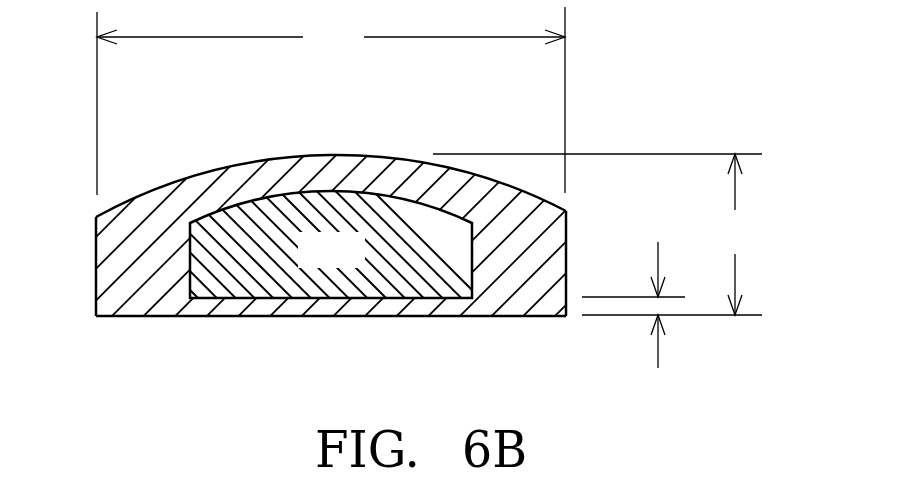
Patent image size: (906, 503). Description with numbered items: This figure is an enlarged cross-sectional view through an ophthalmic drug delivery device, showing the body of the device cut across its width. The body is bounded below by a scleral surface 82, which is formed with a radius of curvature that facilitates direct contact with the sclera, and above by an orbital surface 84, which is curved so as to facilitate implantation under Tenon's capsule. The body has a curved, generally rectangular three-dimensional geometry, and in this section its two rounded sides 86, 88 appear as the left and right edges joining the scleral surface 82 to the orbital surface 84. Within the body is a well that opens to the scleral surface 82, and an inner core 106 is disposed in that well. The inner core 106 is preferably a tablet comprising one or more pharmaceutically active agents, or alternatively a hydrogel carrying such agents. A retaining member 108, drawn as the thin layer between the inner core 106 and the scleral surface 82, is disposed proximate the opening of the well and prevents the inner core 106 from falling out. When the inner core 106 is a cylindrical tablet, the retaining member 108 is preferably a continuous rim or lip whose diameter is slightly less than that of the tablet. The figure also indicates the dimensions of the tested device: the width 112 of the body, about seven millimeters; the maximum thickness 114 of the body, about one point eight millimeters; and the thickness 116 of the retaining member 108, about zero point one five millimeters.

The scleral surface 82 is at (132, 317).
The orbital surface 84 is at (278, 156).
The rounded side 86 is at (96, 257).
The rounded side 88 is at (567, 247).
The inner core 106 is at (354, 261).
The retaining member 108 is at (382, 306).
The width 112 is at (331, 101).
The maximum thickness 114 is at (597, 234).
The thickness 116 is at (633, 322).